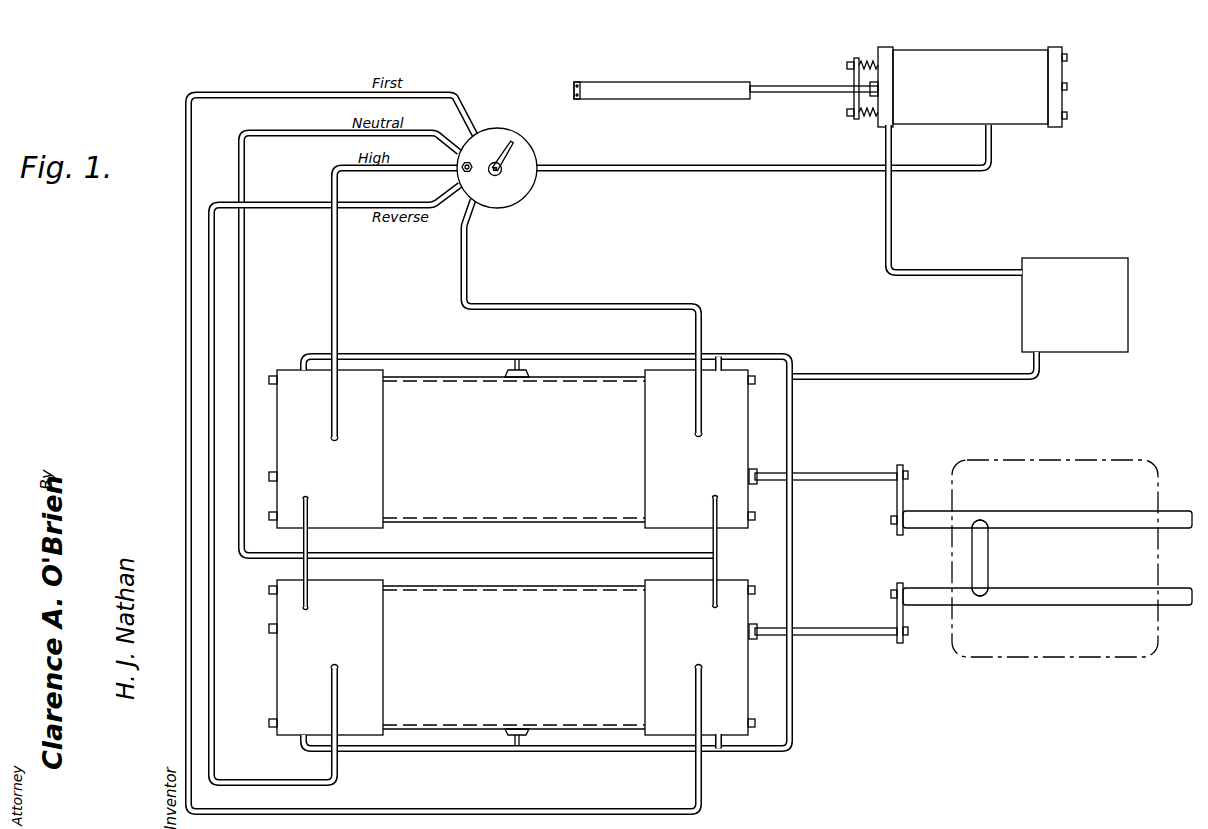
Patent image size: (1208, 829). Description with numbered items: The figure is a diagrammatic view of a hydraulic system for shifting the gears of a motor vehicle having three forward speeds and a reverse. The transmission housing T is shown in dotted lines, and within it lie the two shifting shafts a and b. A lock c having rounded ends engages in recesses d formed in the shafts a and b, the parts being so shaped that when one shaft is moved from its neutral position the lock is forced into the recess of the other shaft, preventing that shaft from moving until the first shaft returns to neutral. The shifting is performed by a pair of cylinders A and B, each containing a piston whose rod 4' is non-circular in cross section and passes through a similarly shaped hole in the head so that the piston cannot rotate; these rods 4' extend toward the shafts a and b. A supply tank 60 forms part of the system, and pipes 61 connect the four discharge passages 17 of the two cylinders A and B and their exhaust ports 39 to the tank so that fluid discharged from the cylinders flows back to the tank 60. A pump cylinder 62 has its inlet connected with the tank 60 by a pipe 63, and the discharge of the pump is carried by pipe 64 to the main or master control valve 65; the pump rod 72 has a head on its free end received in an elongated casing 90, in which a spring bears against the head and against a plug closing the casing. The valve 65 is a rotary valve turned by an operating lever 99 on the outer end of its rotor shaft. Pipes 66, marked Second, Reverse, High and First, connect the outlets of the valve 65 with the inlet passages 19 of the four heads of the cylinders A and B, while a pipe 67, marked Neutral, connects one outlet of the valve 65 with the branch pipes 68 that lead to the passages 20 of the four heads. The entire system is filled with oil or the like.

The discharge passage 17 is at (301, 361).
The inlet passage 19 is at (332, 434).
The passage 20 is at (308, 503).
The exhaust port 39 is at (526, 360).
The supply tank 60 is at (1068, 267).
The pipes 61 is at (790, 725).
The pump cylinder 62 is at (965, 68).
The pipe 63 is at (935, 272).
The pipe 64 is at (756, 172).
The main or master control valve 65 is at (524, 188).
The pipes 66 is at (588, 303).
The pipe 67 is at (238, 406).
The branch pipes 68 is at (300, 544).
The rod 72 is at (764, 86).
The elongated casing 90 is at (663, 77).
The operating lever 99 is at (514, 143).
The piston rod 4' is at (828, 554).
The cylinder A is at (512, 449).
The cylinder B is at (512, 657).
The transmission housing T is at (1050, 660).
The shifting shaft a is at (1177, 516).
The shifting shaft b is at (1175, 589).
The lock c is at (989, 557).
The recess d is at (981, 523).